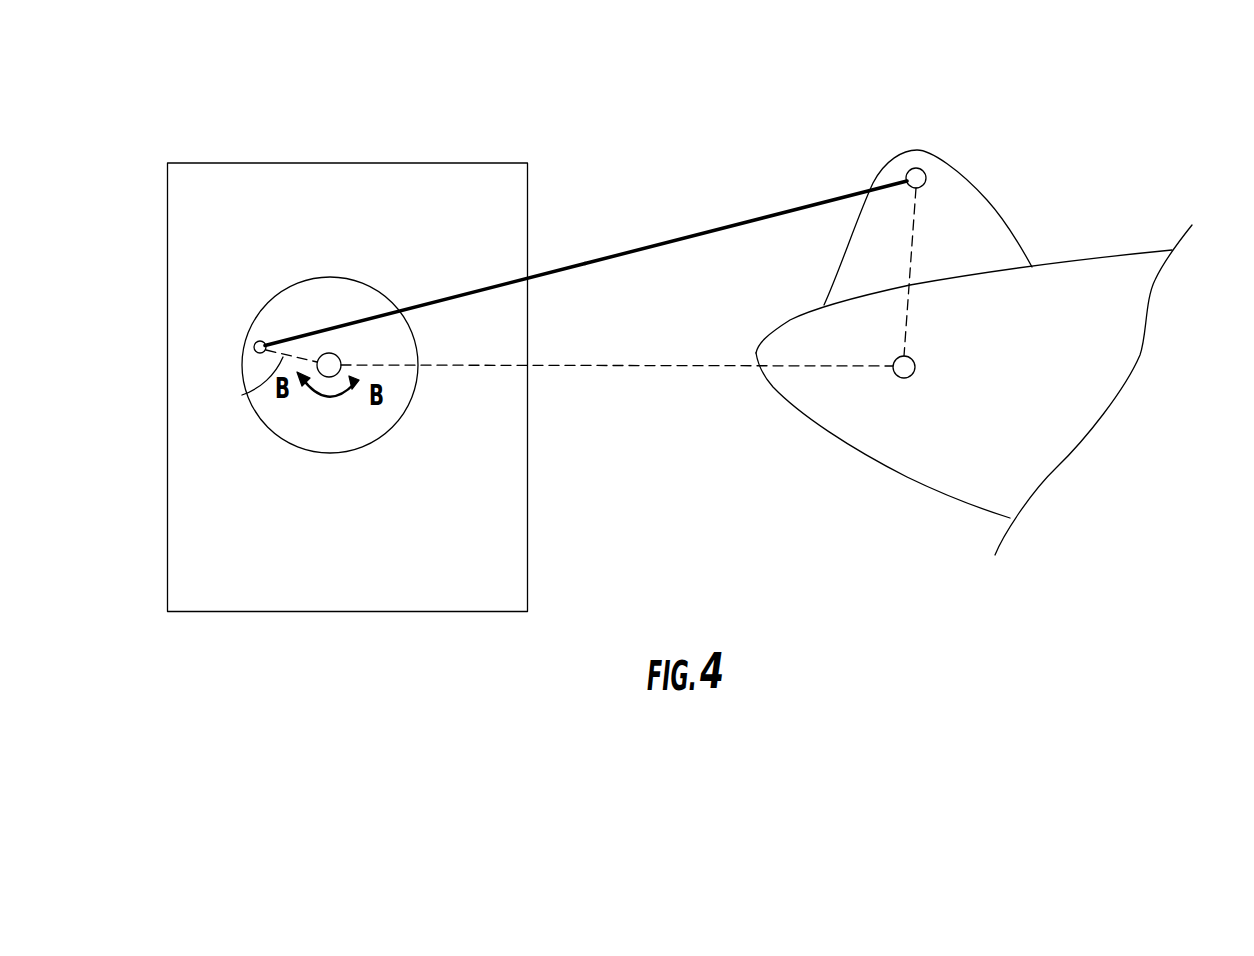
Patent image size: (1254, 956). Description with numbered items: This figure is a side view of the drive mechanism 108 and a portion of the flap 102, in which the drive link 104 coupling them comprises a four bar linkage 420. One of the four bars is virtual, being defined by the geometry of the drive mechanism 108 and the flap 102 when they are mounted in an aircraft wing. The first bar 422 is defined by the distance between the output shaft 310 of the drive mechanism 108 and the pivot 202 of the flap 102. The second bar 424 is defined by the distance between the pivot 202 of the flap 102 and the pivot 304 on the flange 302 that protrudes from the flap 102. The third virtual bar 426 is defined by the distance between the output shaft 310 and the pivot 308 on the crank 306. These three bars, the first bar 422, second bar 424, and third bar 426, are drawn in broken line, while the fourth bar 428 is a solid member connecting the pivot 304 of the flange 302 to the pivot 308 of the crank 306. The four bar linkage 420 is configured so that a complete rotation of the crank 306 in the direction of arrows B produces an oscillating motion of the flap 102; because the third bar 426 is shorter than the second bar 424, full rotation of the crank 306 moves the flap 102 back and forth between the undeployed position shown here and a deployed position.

The flap 102 is at (1111, 255).
The drive link 104 is at (666, 238).
The drive mechanism 108 is at (166, 137).
The pivot 202 is at (904, 378).
The flange 302 is at (987, 198).
The pivot 304 is at (925, 169).
The crank 306 is at (338, 436).
The pivot 308 is at (260, 341).
The output shaft 310 is at (334, 355).
The four bar linkage 420 is at (771, 162).
The first bar 422 is at (635, 367).
The second bar 424 is at (908, 306).
The third virtual bar 426 is at (243, 394).
The fourth bar 428 is at (621, 251).